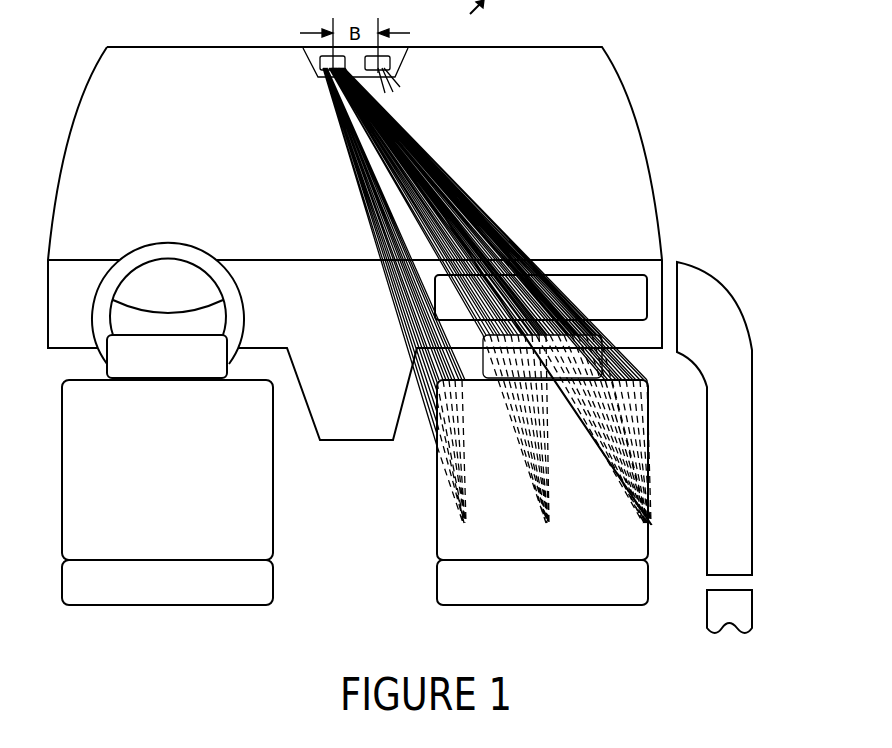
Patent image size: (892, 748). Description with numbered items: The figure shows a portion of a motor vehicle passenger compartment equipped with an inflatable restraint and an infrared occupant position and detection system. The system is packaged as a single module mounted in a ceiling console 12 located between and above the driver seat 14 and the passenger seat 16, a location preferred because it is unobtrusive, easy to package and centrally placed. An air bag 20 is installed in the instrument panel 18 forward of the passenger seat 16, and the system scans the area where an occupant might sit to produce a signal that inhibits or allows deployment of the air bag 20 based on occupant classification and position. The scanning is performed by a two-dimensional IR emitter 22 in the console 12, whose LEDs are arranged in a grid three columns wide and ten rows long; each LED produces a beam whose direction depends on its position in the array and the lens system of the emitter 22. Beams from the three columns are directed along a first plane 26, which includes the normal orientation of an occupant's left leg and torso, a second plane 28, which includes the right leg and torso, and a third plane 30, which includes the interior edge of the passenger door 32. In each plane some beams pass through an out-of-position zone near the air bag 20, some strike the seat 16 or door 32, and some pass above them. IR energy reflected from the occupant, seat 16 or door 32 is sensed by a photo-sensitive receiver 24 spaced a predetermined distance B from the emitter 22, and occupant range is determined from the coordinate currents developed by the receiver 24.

The ceiling console 12 is at (320, 59).
The driver seat 14 is at (62, 513).
The passenger seat 16 is at (437, 498).
The instrument panel 18 is at (332, 294).
The air bag 20 is at (577, 276).
The IR emitter 22 is at (322, 72).
The photo-sensitive receiver 24 is at (395, 66).
The first plane 26 is at (428, 428).
The second plane 28 is at (519, 496).
The third plane 30 is at (614, 494).
The passenger door 32 is at (752, 408).